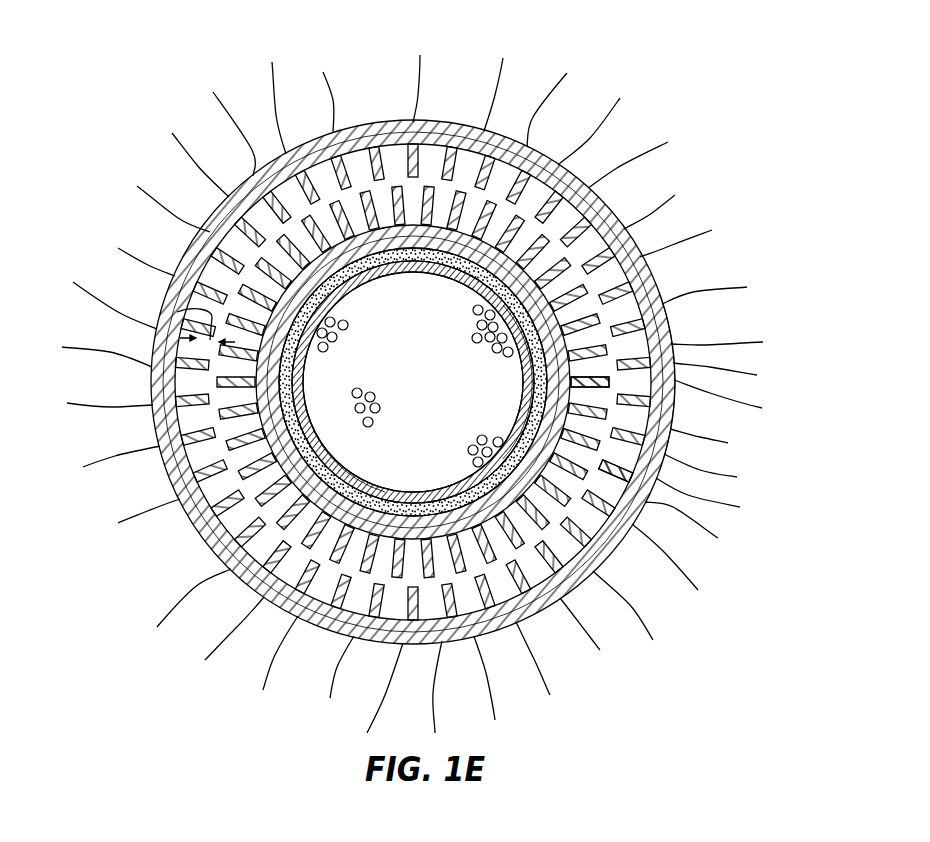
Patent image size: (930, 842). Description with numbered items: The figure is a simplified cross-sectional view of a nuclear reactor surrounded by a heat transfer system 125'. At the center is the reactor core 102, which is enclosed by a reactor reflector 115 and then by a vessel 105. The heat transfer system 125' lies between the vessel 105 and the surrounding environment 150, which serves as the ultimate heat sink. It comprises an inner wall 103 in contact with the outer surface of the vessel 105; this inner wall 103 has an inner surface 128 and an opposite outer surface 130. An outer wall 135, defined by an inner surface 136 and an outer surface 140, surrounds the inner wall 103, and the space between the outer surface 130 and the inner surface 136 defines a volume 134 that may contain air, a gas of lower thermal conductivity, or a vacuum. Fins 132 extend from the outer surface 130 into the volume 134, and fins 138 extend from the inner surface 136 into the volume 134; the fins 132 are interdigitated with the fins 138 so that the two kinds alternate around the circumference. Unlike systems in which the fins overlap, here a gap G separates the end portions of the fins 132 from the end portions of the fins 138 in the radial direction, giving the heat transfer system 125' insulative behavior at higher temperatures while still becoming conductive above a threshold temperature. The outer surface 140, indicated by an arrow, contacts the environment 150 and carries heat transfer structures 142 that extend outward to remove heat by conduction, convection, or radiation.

The reactor core 102 is at (431, 387).
The inner wall 103 is at (297, 373).
The vessel 105 is at (370, 486).
The reactor reflector 115 is at (523, 398).
The heat transfer system 125' is at (346, 382).
The inner surface 128 is at (437, 272).
The outer surface 130 is at (372, 240).
The fins 132 is at (627, 470).
The volume 134 is at (726, 505).
The outer wall 135 is at (610, 388).
The inner surface 136 is at (355, 150).
The fins 138 is at (665, 224).
The outer surface 140 is at (664, 283).
The heat transfer structures 142 is at (610, 118).
The surrounding environment 150 is at (423, 374).
The gap G is at (167, 295).